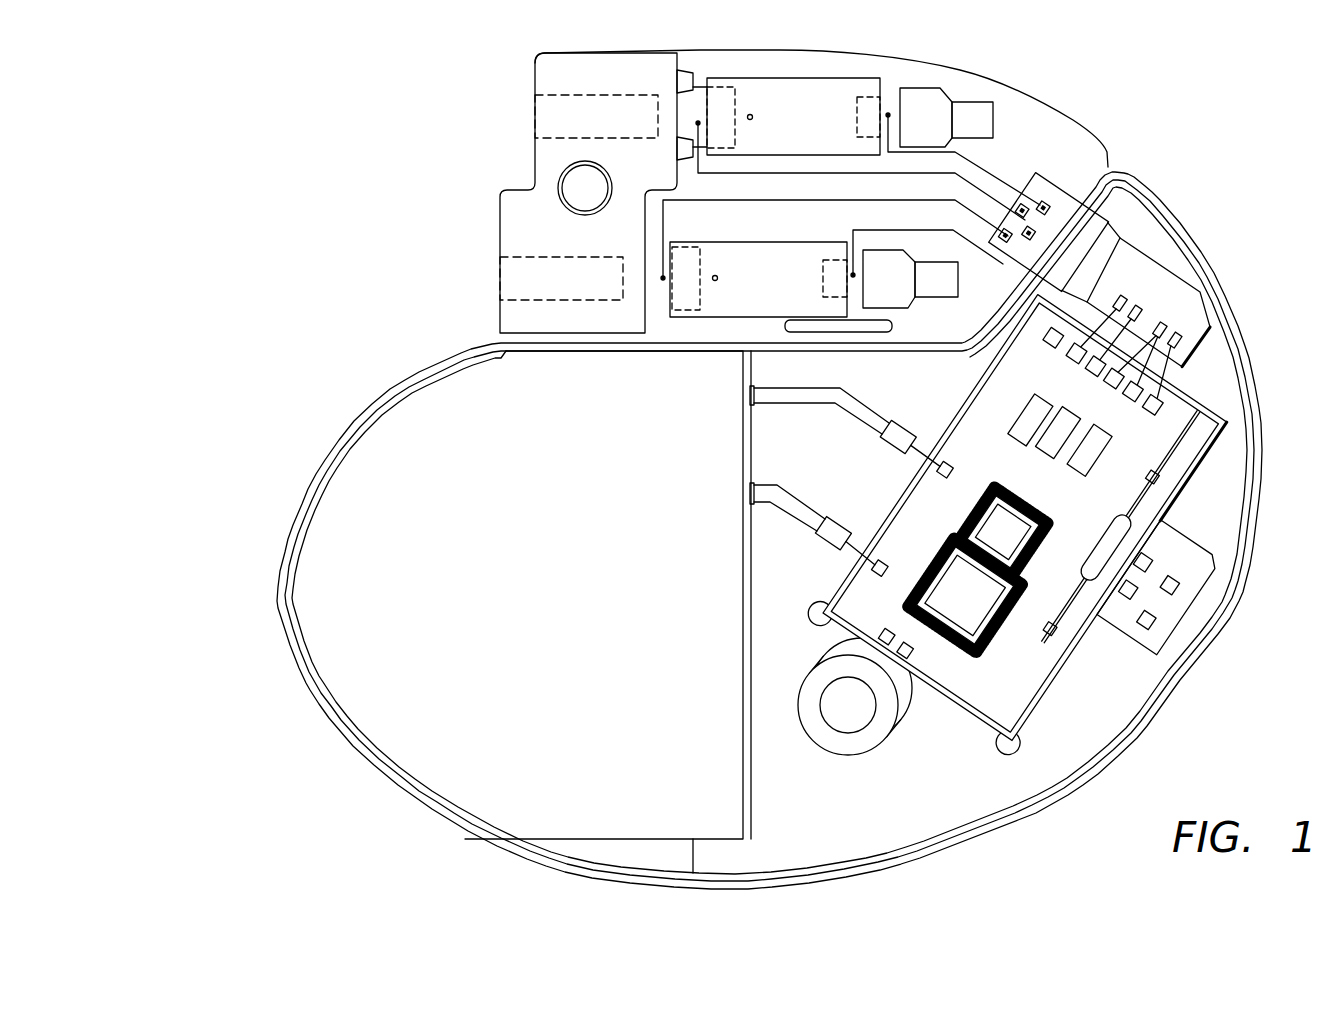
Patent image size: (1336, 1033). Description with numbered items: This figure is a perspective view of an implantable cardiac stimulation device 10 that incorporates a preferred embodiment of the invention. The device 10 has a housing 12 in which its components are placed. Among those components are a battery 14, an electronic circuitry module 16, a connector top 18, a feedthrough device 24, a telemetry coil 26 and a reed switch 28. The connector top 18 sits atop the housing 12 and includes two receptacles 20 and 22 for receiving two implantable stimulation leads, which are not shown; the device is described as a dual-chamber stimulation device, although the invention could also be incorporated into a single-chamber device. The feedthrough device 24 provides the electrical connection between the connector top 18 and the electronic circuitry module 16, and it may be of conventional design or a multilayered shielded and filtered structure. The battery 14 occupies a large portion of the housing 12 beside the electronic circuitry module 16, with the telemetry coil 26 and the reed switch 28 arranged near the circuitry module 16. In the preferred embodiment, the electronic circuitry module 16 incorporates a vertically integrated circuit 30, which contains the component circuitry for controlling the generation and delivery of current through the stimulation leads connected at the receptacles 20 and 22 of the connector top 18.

The implantable cardiac stimulation device 10 is at (293, 214).
The housing 12 is at (1252, 355).
The battery 14 is at (562, 628).
The electronic circuitry module 16 is at (1043, 464).
The connector top 18 is at (840, 50).
The receptacle 20 is at (485, 78).
The receptacle 22 is at (457, 245).
The feedthrough device 24 is at (1163, 257).
The telemetry coil 26 is at (882, 747).
The reed switch 28 is at (1128, 525).
The vertically integrated circuit 30 is at (988, 462).